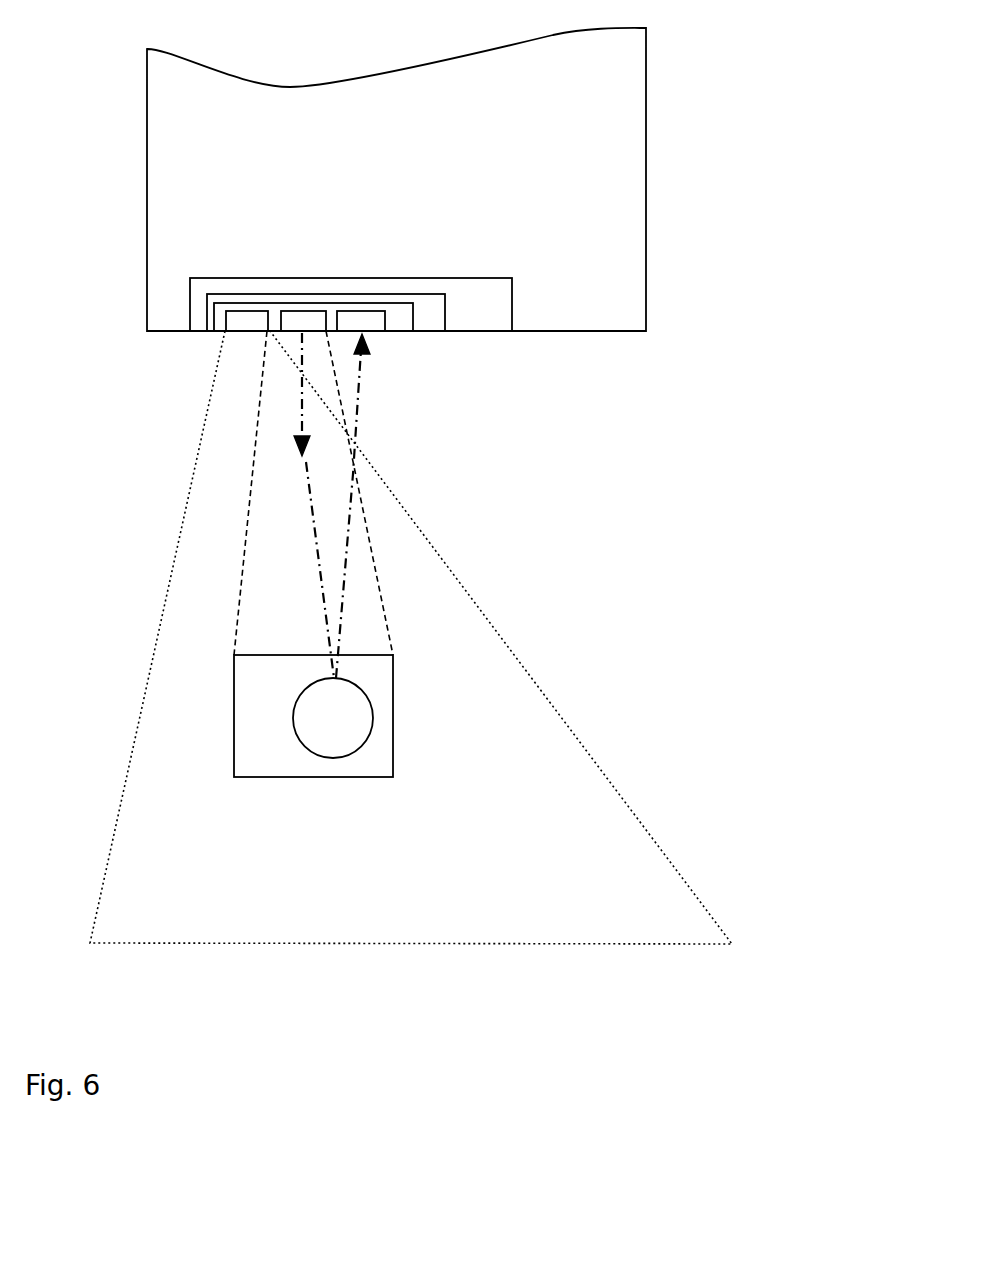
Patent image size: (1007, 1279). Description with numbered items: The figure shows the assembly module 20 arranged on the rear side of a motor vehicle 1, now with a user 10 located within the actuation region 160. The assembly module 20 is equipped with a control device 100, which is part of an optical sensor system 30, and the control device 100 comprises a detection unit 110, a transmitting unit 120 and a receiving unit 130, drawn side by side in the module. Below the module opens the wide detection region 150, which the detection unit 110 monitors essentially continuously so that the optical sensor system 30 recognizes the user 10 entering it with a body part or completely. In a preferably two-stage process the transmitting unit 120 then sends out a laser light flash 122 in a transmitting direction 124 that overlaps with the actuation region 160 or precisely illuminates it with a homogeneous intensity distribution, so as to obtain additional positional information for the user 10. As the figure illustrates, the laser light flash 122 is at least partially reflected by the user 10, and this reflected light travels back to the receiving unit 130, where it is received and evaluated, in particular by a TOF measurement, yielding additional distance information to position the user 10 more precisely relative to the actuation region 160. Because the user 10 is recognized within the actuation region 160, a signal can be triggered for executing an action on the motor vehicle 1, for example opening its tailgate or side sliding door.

The motor vehicle 1 is at (698, 128).
The assembly module 20 is at (467, 278).
The optical sensor system 30 is at (445, 318).
The control device 100 is at (413, 318).
The detection unit 110 is at (251, 311).
The transmitting unit 120 is at (299, 311).
The receiving unit 130 is at (361, 311).
The transmitting direction 124 is at (295, 425).
The laser light flash 122 is at (352, 474).
The actuation region 160 is at (225, 668).
The user 10 is at (358, 717).
The detection region 150 is at (650, 894).